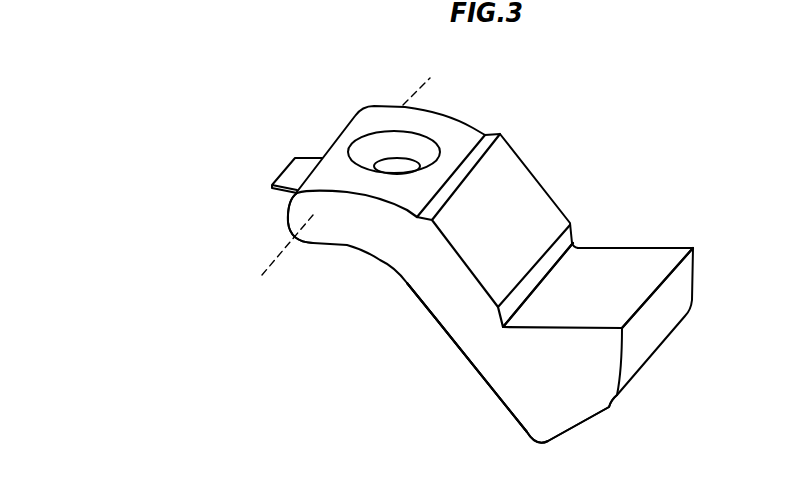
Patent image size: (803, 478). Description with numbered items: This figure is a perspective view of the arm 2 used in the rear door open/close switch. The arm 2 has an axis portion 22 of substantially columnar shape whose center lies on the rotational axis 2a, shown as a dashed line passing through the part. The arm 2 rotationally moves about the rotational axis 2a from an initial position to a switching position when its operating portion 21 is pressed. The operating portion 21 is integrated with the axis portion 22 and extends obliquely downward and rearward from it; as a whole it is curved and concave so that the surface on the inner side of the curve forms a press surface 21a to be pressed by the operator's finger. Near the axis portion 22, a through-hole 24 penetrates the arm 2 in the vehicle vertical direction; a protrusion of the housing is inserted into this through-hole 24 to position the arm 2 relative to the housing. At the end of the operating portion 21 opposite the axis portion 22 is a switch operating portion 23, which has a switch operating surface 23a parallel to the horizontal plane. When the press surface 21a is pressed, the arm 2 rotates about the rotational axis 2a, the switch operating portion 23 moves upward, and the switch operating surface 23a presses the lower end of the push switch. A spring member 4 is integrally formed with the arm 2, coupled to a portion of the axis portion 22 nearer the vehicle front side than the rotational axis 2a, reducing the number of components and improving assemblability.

The arm 2 is at (445, 265).
The rotational axis 2a is at (419, 89).
The spring member 4 is at (293, 172).
The operating portion 21 is at (448, 367).
The press surface 21a is at (442, 332).
The axis portion 22 is at (287, 215).
The switch operating portion 23 is at (618, 262).
The switch operating surface 23a is at (652, 265).
The through-hole 24 is at (375, 155).